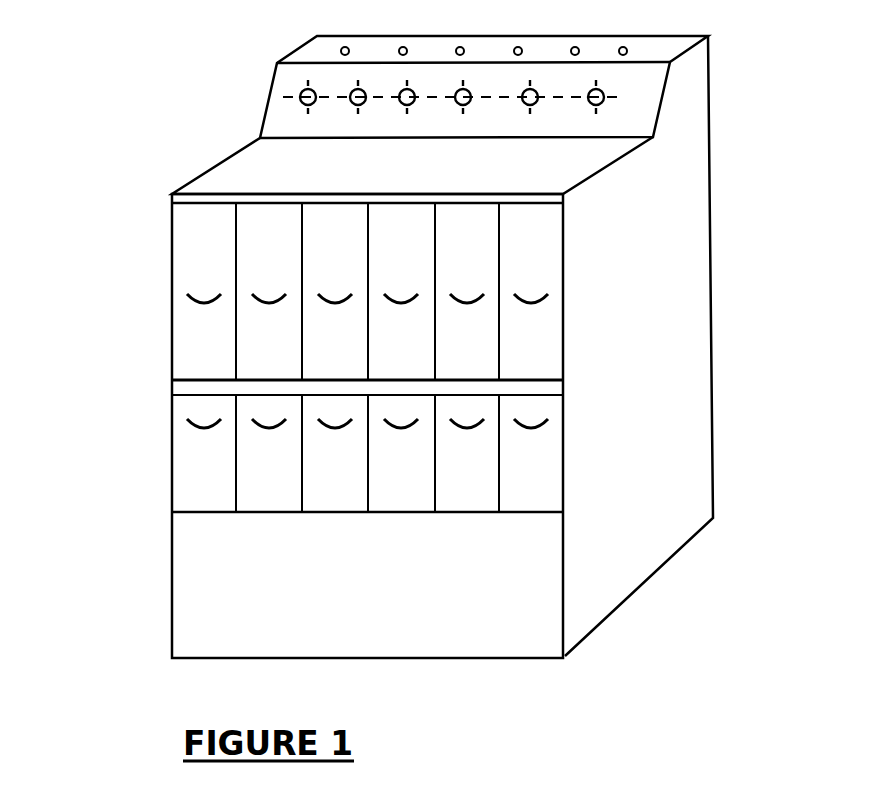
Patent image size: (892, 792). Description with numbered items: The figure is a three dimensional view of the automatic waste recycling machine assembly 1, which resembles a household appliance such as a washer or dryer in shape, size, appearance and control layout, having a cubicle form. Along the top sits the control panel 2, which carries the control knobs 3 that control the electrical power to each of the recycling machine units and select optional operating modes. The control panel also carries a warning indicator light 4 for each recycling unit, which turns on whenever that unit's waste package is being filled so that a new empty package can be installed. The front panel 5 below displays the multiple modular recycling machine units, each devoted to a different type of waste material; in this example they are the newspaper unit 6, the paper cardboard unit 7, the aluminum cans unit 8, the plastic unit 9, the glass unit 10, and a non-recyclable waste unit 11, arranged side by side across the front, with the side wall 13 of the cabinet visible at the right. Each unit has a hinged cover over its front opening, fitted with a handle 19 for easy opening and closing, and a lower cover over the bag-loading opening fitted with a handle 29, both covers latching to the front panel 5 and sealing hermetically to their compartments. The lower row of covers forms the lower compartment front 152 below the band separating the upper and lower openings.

The recycling machine assembly 1 is at (285, 172).
The top control panel 2 is at (285, 122).
The control knobs 3 is at (603, 100).
The warning indicator light 4 is at (630, 50).
The front panel 5 is at (255, 552).
The newspaper unit 6 is at (203, 245).
The paper cardboard unit 7 is at (197, 295).
The aluminum cans unit 8 is at (352, 253).
The plastic unit 9 is at (418, 312).
The glass unit 10 is at (477, 362).
The compartment 11 is at (524, 228).
The side wall 13 is at (595, 513).
The handle 19 is at (253, 353).
The handle 29 is at (188, 430).
The lower compartment 152 is at (168, 473).